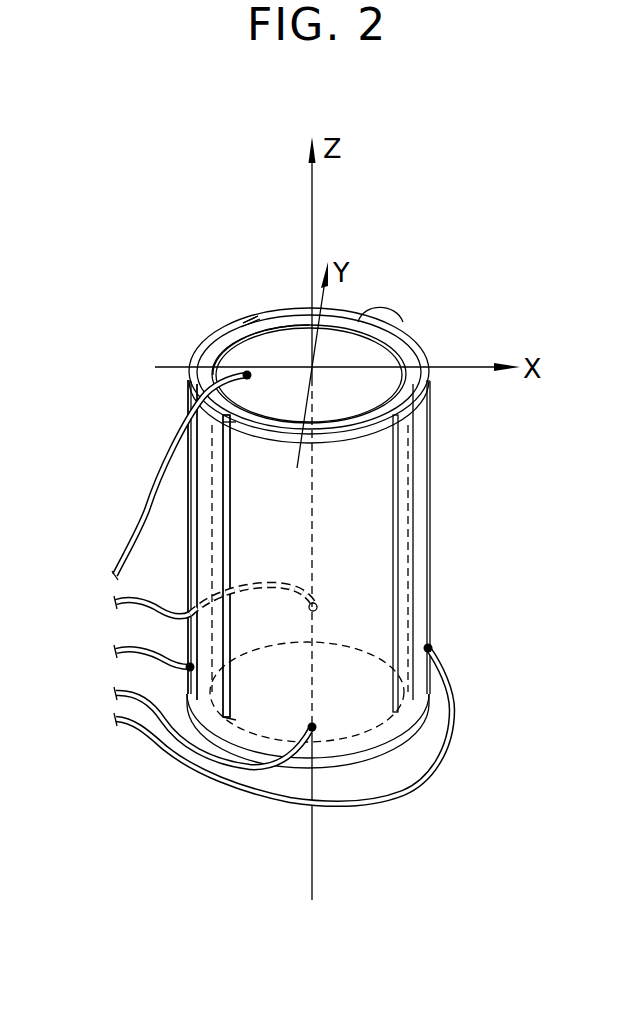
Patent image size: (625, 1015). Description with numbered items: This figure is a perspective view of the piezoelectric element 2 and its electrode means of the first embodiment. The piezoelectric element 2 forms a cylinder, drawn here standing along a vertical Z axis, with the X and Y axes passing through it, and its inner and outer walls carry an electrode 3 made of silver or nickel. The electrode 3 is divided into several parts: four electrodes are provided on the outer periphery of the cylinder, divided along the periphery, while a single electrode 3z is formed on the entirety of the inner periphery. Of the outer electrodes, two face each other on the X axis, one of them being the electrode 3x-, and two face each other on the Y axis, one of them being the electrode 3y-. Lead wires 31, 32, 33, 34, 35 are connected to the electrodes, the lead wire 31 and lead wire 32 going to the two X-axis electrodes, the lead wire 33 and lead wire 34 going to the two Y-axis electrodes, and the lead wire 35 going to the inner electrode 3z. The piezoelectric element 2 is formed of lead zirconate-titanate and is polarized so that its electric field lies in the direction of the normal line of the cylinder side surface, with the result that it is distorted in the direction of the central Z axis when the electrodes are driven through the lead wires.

The piezoelectric element 2 is at (405, 348).
The electrode 3 is at (88, 281).
The electrode 3z is at (250, 355).
The electrode 3x- is at (187, 410).
The electrode 3y- is at (262, 477).
The lead wire 31 is at (395, 794).
The lead wire 32 is at (120, 642).
The lead wire 33 is at (120, 598).
The lead wire 34 is at (118, 697).
The lead wire 35 is at (123, 543).